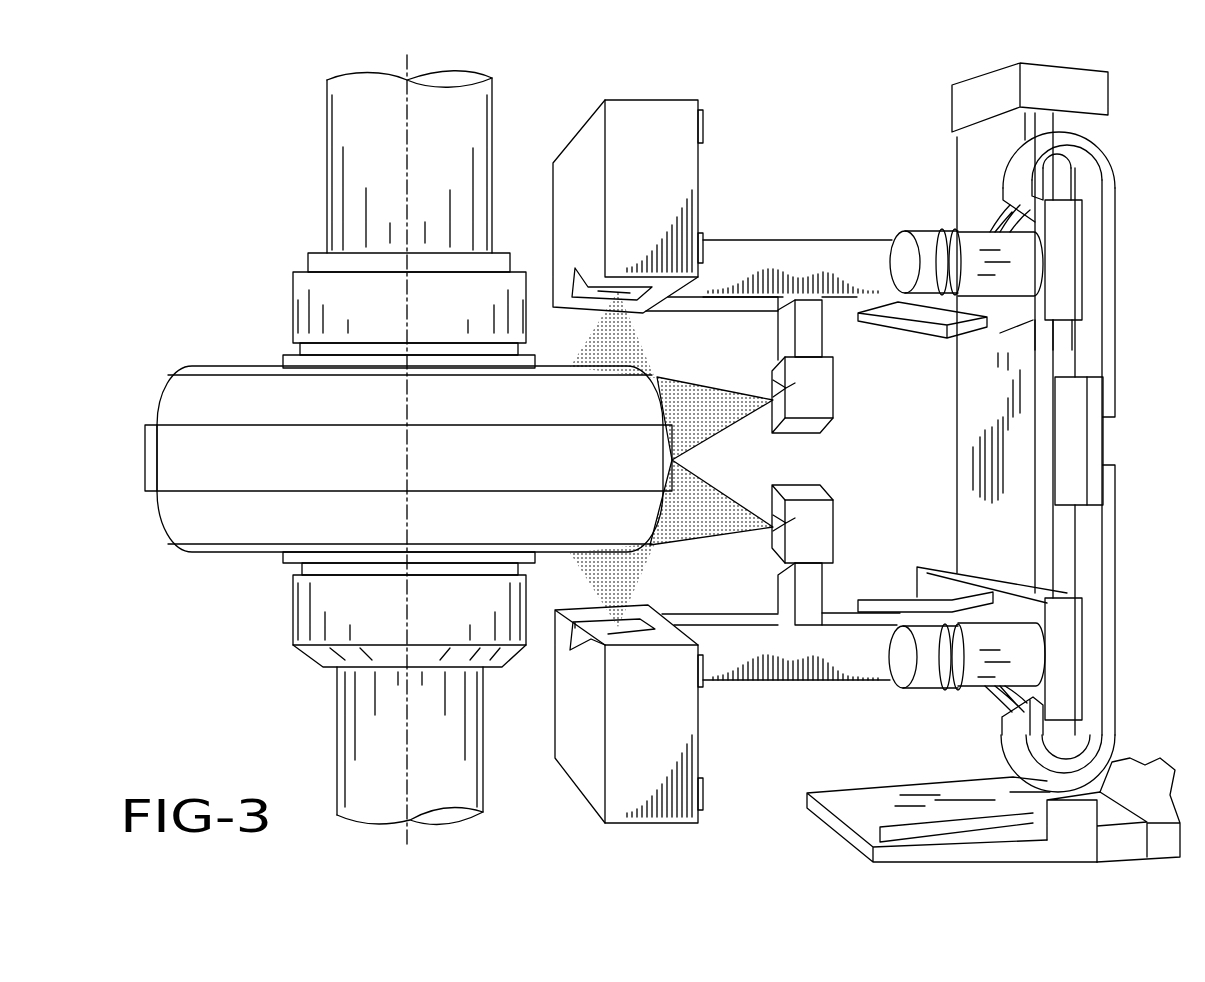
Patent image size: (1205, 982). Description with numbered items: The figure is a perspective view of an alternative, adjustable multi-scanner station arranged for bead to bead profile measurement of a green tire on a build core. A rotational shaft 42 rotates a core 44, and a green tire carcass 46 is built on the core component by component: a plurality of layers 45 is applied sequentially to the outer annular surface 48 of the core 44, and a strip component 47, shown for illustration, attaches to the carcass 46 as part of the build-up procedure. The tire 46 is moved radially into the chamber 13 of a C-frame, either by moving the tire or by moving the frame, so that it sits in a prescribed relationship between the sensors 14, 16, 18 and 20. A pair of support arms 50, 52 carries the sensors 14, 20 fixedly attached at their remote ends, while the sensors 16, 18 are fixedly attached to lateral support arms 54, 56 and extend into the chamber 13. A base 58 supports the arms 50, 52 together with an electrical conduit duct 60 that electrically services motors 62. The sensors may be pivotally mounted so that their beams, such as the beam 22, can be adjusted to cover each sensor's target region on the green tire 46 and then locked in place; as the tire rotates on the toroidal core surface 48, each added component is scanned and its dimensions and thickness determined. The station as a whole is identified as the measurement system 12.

The upper light projection unit 12 is at (840, 273).
The chamber 13 is at (841, 646).
The sensor 14 is at (633, 787).
The sensor 16 is at (820, 522).
The sensor 18 is at (820, 397).
The sensor 20 is at (632, 132).
The light beam 22 is at (640, 345).
The rotational shaft 42 is at (365, 725).
The core 44 is at (298, 666).
The layers 45 is at (203, 513).
The green tire carcass 46 is at (194, 356).
The strip component 47 is at (157, 458).
The outer annular surface 48 is at (322, 595).
The support arm 50 is at (757, 668).
The support arm 52 is at (757, 252).
The lateral support arm 54 is at (810, 585).
The lateral support arm 56 is at (810, 332).
The base 58 is at (1058, 568).
The electrical conduit duct 60 is at (1110, 518).
The motors 62 is at (1025, 257).